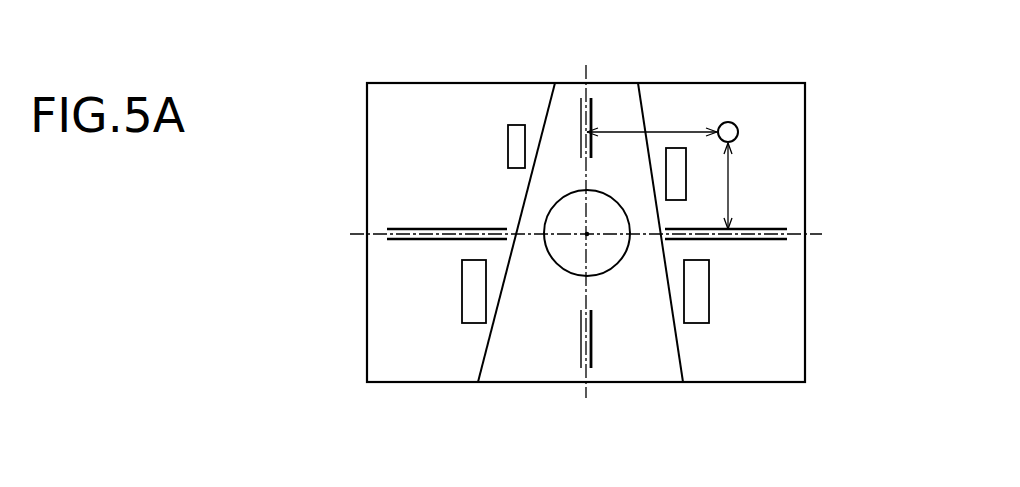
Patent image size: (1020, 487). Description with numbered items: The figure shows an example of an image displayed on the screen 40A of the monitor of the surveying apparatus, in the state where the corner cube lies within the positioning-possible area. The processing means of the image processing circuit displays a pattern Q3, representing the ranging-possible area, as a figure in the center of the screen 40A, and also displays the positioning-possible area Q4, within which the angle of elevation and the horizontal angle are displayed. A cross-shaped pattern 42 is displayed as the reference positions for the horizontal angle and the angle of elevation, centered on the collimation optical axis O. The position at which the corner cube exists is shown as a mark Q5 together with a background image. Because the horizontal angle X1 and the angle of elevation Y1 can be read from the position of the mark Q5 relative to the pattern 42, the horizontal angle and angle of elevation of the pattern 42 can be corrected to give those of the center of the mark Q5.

The screen 40A is at (490, 107).
The cross-shaped pattern 42 is at (592, 110).
The horizontal angle X1 is at (671, 132).
The mark Q5 is at (738, 129).
The angle of elevation Y1 is at (730, 180).
The collimation optical axis O is at (587, 236).
The pattern Q3 is at (622, 258).
The positioning-possible area Q4 is at (750, 355).